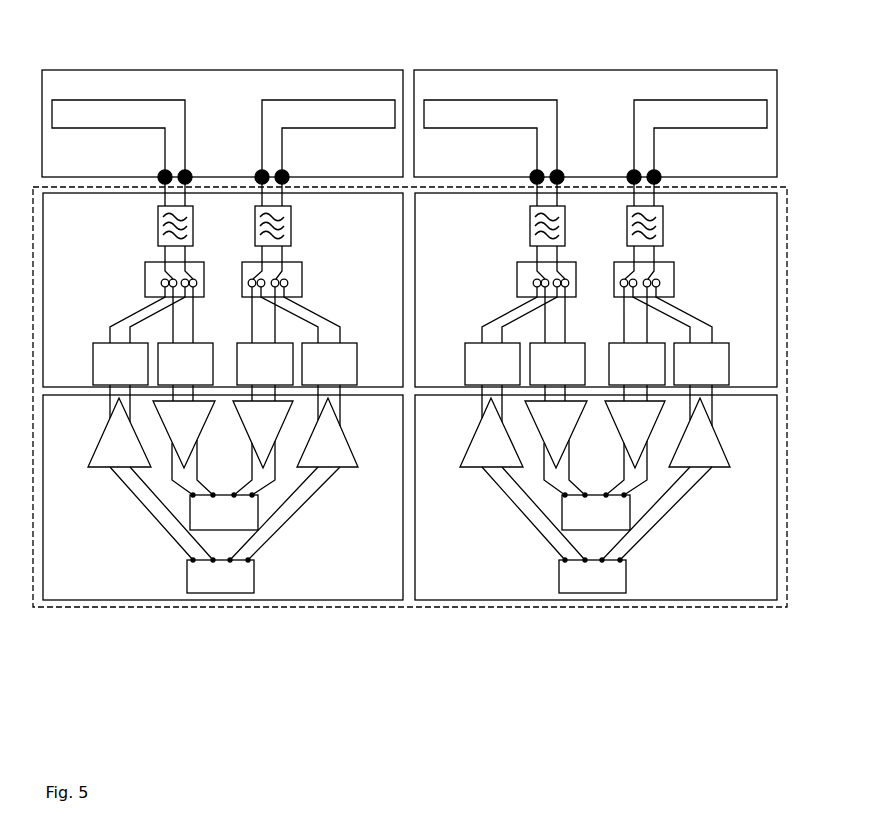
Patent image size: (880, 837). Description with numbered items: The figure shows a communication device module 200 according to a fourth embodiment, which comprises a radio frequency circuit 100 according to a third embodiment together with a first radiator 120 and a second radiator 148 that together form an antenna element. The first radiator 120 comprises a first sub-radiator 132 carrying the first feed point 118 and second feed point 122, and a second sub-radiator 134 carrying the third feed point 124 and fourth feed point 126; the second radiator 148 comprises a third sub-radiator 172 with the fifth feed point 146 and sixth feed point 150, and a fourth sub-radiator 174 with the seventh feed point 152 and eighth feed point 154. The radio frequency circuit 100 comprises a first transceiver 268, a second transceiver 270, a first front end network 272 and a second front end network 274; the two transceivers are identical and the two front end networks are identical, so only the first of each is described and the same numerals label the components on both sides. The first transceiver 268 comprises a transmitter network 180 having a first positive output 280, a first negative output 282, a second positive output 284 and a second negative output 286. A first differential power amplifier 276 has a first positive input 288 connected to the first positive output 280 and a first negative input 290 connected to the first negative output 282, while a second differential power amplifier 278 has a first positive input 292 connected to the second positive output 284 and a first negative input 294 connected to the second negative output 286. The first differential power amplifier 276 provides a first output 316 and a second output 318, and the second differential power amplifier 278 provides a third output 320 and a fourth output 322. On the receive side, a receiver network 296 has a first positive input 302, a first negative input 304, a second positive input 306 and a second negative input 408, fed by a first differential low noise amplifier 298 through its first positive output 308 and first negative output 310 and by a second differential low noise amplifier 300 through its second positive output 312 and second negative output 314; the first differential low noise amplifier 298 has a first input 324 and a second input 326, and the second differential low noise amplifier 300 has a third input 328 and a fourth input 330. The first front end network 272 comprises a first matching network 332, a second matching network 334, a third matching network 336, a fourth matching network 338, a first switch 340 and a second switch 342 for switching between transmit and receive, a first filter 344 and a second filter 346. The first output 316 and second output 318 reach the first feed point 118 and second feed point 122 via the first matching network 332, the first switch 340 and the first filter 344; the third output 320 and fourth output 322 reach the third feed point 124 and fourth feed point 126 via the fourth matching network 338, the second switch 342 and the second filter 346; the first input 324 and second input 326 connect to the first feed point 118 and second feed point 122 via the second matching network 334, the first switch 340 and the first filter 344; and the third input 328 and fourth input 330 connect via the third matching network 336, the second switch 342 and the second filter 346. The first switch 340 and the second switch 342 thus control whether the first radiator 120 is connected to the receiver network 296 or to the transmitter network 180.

The radio frequency circuit 100 is at (438, 608).
The communication device module 200 is at (422, 718).
The first radiator 120 is at (230, 70).
The second radiator 148 is at (585, 70).
The first sub-radiator 132 is at (122, 100).
The second sub-radiator 134 is at (323, 100).
The third sub-radiator 172 is at (467, 100).
The fourth sub-radiator 174 is at (720, 100).
The first feed point 118 is at (160, 174).
The second feed point 122 is at (190, 170).
The third feed point 124 is at (258, 174).
The fourth feed point 126 is at (288, 172).
The fifth feed point 146 is at (530, 174).
The sixth feed point 150 is at (560, 172).
The seventh feed point 152 is at (631, 170).
The eighth feed point 154 is at (660, 172).
The first front end network 272 is at (60, 225).
The second front end network 274 is at (732, 221).
The first transceiver 268 is at (60, 591).
The second transceiver 270 is at (723, 591).
The first filter 344 is at (158, 230).
The second filter 346 is at (292, 222).
The first switch 340 is at (145, 268).
The second switch 342 is at (303, 272).
The first matching network 332 is at (98, 342).
The second matching network 334 is at (202, 342).
The third matching network 336 is at (252, 342).
The fourth matching network 338 is at (352, 342).
The second output 318 is at (306, 364).
The second input 326 is at (371, 364).
The third input 328 is at (451, 364).
The third output 320 is at (515, 364).
The first input 324 is at (358, 385).
The fourth input 330 is at (462, 385).
The first output 316 is at (110, 423).
The first positive output 308 is at (133, 422).
The fourth output 322 is at (338, 424).
The first differential power amplifier 276 is at (105, 447).
The second differential power amplifier 278 is at (313, 447).
The first negative input 290 is at (314, 458).
The first positive input 292 is at (505, 459).
The first differential low noise amplifier 298 is at (167, 422).
The second differential low noise amplifier 300 is at (247, 424).
The first negative output 310 is at (197, 448).
The second positive output 312 is at (251, 449).
The second negative output 314 is at (276, 448).
The receiver network 296 is at (409, 477).
The first negative input 304 is at (410, 512).
The second positive input 306 is at (426, 515).
The first positive input 302 is at (192, 496).
The second negative input 408 is at (253, 496).
The first positive input 288 is at (110, 467).
The first negative input 294 is at (340, 468).
The transmitter network 180 is at (223, 593).
The first positive output 280 is at (192, 562).
The first negative output 282 is at (212, 562).
The second positive output 284 is at (231, 562).
The second negative output 286 is at (249, 562).